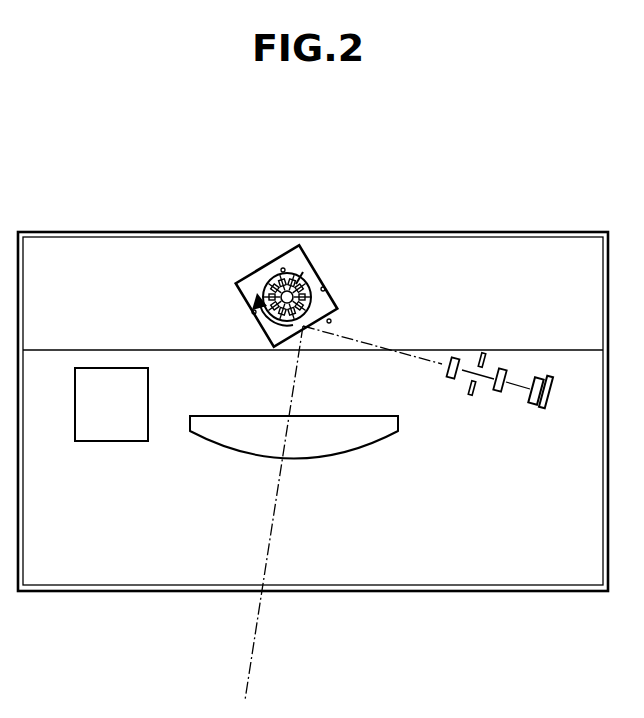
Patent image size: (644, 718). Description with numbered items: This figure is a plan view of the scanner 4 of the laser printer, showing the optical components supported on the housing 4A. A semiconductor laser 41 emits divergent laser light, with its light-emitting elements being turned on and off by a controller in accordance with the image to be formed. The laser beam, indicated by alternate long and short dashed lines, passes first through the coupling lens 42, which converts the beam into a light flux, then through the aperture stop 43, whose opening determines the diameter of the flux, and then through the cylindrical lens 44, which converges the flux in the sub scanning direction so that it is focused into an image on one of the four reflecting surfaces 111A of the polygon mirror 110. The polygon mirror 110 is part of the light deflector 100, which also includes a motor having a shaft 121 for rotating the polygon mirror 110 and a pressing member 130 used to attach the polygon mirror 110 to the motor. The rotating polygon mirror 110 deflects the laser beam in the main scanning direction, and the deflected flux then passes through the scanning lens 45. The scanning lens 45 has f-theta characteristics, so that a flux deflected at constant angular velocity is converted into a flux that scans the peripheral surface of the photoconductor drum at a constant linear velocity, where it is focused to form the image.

The scanner 4 is at (108, 204).
The housing 4A is at (209, 232).
The semiconductor laser 41 is at (540, 376).
The coupling lens 42 is at (504, 368).
The aperture stop 43 is at (484, 352).
The cylindrical lens 44 is at (453, 358).
The scanning lens 45 is at (228, 415).
The light deflector 100 is at (274, 249).
The polygon mirror 110 is at (260, 258).
The reflecting surfaces 111A is at (283, 268).
The shaft 121 is at (256, 287).
The pressing member 130 is at (303, 272).